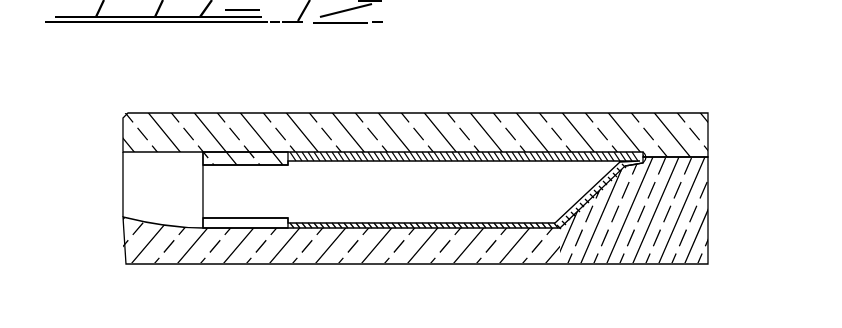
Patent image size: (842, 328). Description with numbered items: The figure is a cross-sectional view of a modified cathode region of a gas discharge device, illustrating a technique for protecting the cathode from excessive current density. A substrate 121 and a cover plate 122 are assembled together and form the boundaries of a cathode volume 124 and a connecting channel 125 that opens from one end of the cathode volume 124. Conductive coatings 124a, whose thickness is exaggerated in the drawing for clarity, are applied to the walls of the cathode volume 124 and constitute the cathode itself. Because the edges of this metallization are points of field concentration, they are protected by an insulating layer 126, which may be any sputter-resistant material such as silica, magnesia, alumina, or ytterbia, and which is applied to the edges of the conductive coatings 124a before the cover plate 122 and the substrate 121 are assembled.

The substrate 121 is at (683, 230).
The cover plate 122 is at (690, 135).
The cathode volume 124 is at (550, 180).
The conductive coatings 124a is at (440, 154).
The connecting channel 125 is at (147, 180).
The insulating layer 126 is at (240, 163).